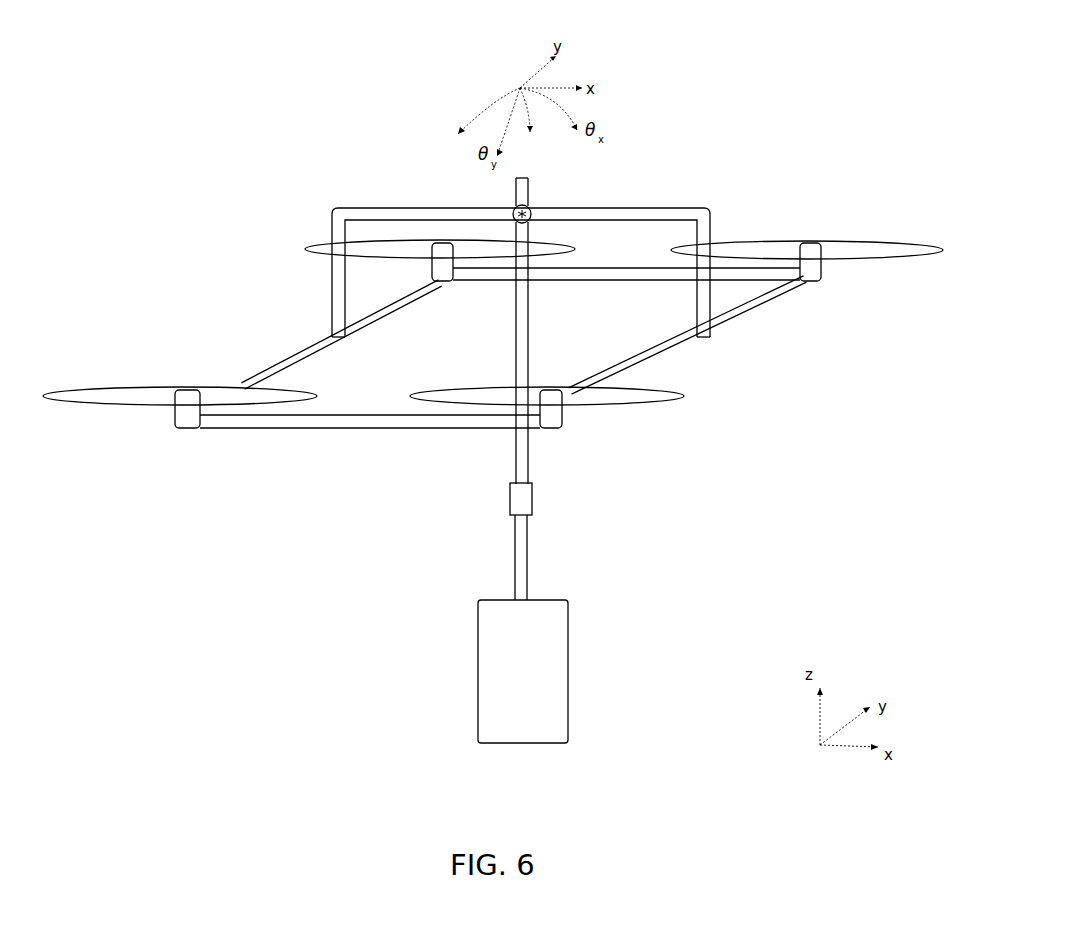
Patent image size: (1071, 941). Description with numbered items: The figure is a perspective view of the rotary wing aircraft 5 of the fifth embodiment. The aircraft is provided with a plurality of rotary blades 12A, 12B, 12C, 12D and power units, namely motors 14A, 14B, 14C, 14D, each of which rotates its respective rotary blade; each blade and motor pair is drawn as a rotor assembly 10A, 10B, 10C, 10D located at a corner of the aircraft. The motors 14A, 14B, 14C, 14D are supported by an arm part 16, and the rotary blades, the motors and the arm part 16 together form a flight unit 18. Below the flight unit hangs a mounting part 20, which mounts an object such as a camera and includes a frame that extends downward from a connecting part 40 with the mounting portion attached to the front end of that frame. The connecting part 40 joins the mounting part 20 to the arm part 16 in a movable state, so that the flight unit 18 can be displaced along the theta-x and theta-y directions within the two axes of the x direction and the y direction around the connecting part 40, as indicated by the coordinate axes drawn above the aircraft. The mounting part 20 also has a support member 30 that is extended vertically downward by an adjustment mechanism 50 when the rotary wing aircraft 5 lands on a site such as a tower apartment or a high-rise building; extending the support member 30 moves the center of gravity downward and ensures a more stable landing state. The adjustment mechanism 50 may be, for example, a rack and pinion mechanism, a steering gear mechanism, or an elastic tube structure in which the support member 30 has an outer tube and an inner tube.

The rotary wing aircraft 5 is at (682, 92).
The rotor assembly 10A is at (200, 362).
The rotor assembly 10B is at (405, 232).
The rotor assembly 10C is at (558, 366).
The rotor assembly 10D is at (812, 206).
The rotary blade 12A is at (135, 385).
The rotary blade 12B is at (322, 247).
The rotary blade 12C is at (656, 398).
The rotary blade 12D is at (884, 238).
The power unit (motor) 14A is at (206, 422).
The power unit (motor) 14B is at (440, 284).
The power unit (motor) 14C is at (565, 420).
The power unit (motor) 14D is at (822, 274).
The arm part 16 is at (740, 330).
The flight unit 18 is at (672, 190).
The mounting part 20 is at (548, 660).
The support member 30 is at (531, 548).
The connecting part 40 is at (532, 210).
The adjustment mechanism 50 is at (534, 497).